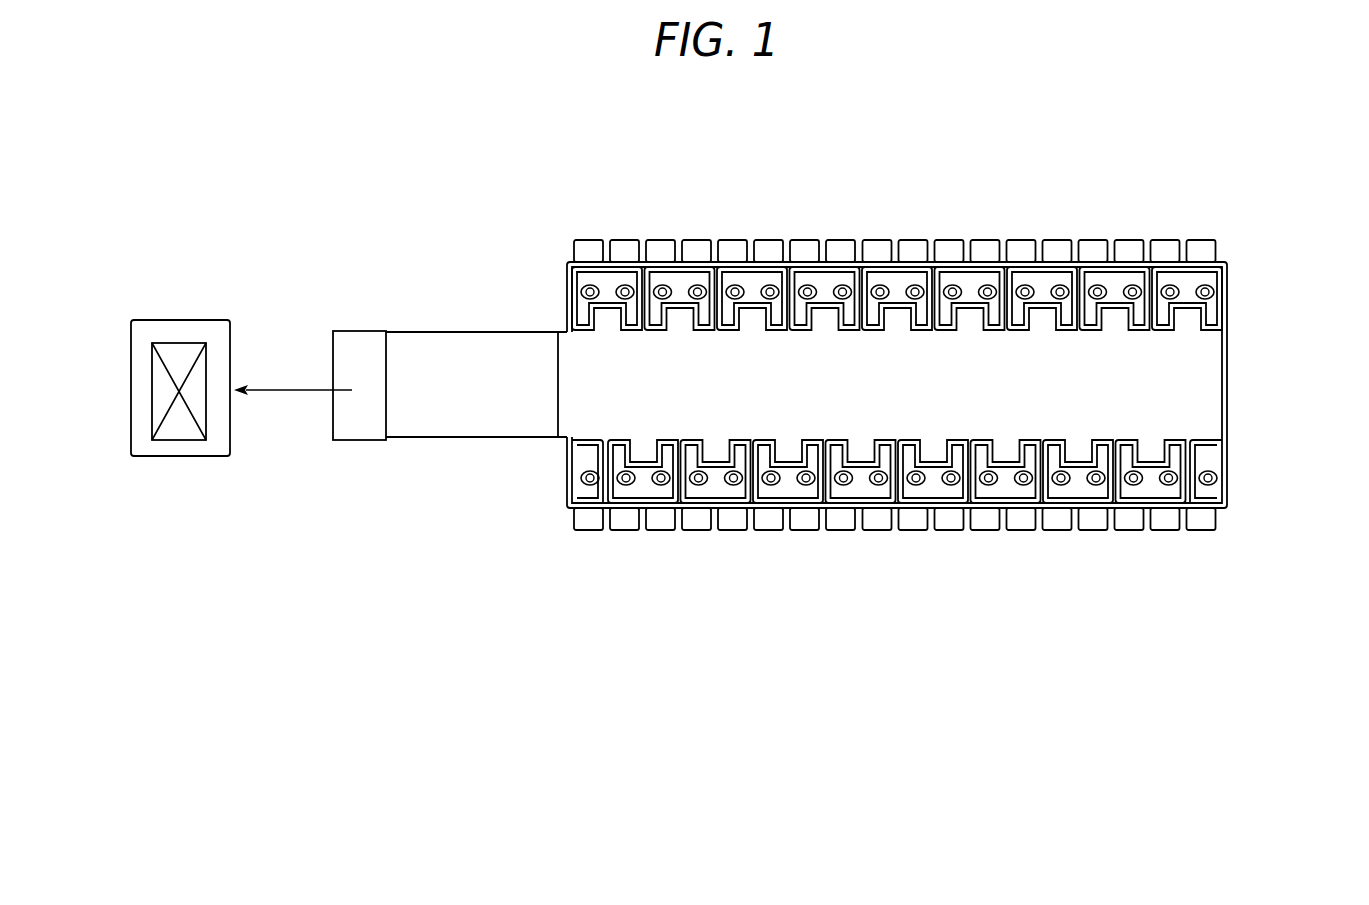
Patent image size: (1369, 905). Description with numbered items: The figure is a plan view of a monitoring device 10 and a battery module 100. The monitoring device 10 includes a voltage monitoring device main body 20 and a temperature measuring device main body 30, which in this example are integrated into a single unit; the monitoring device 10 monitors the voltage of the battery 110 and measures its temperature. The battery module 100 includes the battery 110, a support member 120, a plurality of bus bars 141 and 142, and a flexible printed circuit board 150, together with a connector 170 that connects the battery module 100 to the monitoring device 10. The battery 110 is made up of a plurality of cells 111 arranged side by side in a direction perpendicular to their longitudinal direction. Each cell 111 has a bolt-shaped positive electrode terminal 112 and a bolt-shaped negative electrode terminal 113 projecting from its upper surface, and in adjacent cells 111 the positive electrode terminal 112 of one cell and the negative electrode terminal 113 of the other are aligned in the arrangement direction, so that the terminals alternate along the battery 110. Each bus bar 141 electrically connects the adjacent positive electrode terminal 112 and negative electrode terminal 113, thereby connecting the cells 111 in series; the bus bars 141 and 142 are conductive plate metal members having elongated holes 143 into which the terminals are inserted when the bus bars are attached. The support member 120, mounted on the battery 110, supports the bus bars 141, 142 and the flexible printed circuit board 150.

The monitoring device 10 is at (146, 310).
The voltage monitoring device main body 20 is at (181, 348).
The temperature measuring device main body 30 is at (180, 358).
The battery module 100 is at (533, 226).
The battery 110 is at (898, 328).
The cell 111 is at (592, 255).
The positive electrode terminal 112 is at (580, 289).
The negative electrode terminal 113 is at (622, 287).
The support member 120 is at (971, 264).
The bus bar 141 is at (584, 313).
The bus bar 142 is at (567, 500).
The elongated hole 143 is at (582, 292).
The flexible printed circuit board 150 is at (1199, 390).
The connector 170 is at (360, 360).